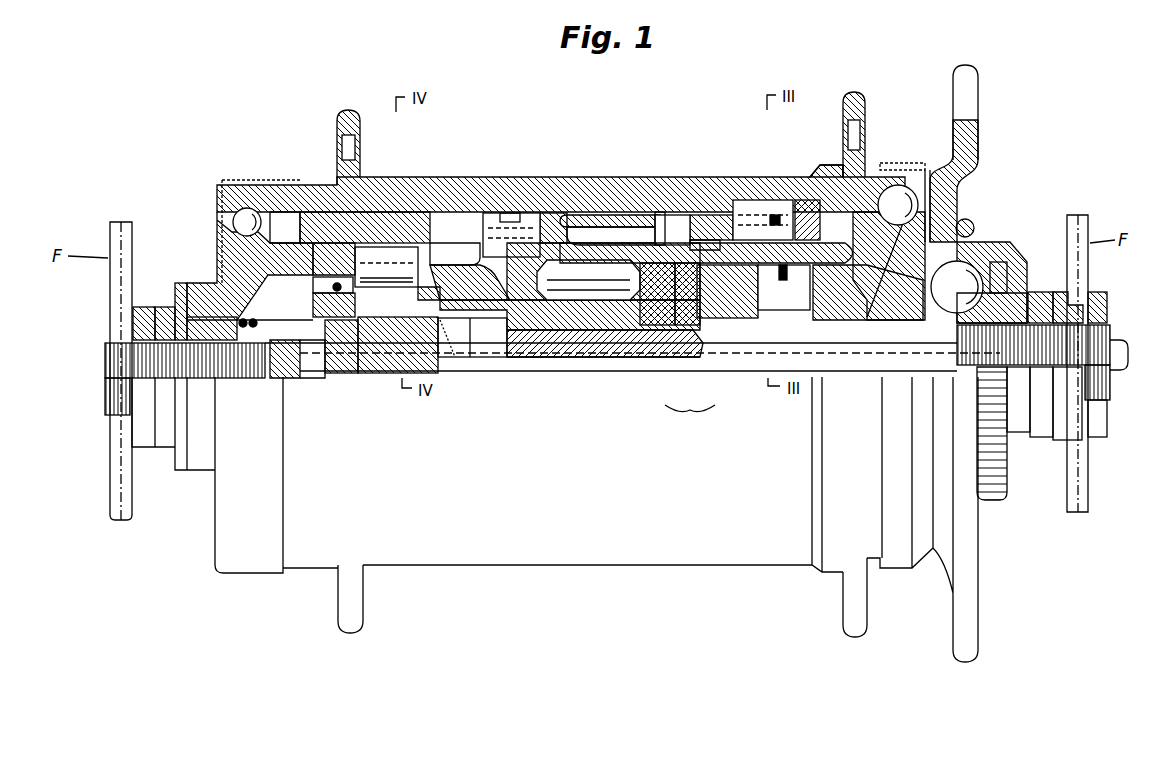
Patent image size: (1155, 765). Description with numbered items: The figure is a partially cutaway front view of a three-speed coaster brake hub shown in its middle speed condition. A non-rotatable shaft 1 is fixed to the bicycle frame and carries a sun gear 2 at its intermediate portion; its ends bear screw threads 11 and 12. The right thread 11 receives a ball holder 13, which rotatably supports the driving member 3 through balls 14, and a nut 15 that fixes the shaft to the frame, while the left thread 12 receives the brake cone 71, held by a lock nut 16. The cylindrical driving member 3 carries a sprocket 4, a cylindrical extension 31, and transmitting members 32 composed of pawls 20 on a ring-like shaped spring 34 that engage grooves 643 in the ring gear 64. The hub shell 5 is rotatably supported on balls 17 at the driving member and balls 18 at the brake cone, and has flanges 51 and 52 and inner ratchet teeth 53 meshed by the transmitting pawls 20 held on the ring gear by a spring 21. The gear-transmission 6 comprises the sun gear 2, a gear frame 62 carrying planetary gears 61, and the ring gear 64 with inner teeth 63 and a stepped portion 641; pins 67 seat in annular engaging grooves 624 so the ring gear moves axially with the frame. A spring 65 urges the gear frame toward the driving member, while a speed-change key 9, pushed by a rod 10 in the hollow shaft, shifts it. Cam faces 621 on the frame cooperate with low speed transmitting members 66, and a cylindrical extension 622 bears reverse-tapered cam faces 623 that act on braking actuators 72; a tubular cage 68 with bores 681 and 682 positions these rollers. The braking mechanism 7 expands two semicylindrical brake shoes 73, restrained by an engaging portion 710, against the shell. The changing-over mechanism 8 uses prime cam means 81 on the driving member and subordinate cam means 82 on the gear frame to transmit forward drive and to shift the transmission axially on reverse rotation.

The non-rotatable shaft 1 is at (292, 372).
The sun gear 2 is at (560, 350).
The driving member 3 is at (980, 245).
The sprocket 4 is at (978, 135).
The hub shell 5 is at (580, 180).
The gear-transmission 6 is at (548, 243).
The braking mechanism 7 is at (322, 212).
The changing-over mechanism 8 is at (690, 419).
The speed-change key 9 is at (430, 372).
The rod 10 is at (528, 340).
The screw thread 11 is at (1105, 400).
The screw thread 12 is at (112, 418).
The ball holder 13 is at (1020, 298).
The balls 14 is at (1010, 265).
The nut 15 is at (1108, 292).
The lock nut 16 is at (155, 307).
The balls 17 is at (910, 190).
The balls 18 is at (234, 216).
The transmitting pawls 20 is at (750, 210).
The ring-like shaped spring 21 is at (775, 222).
The cylindrical extension 31 is at (740, 318).
The transmitting members 32 is at (820, 310).
The ring-like shaped spring 34 is at (783, 280).
The flange 51 is at (850, 90).
The flange 52 is at (345, 108).
The ratchet teeth 53 is at (830, 185).
The planetary gears 61 is at (597, 318).
The gear frame 62 is at (493, 325).
The inner teeth 63 is at (605, 213).
The ring gear 64 is at (638, 215).
The spring 65 is at (255, 318).
The low speed transmitting members 66 is at (517, 245).
The pins 67 is at (672, 225).
The tubular cage 68 is at (455, 254).
The brake cone 71 is at (225, 258).
The braking actuators 72 is at (398, 252).
The brake shoes 73 is at (380, 225).
The prime cam means 81 is at (700, 330).
The subordinate cam means 82 is at (665, 335).
The cam faces 621 is at (493, 240).
The cylindrical extension 622 is at (470, 340).
The cam faces 623 is at (382, 350).
The annular engaging grooves 624 is at (660, 245).
The stepped portion 641 is at (695, 215).
The engaging grooves 643 is at (737, 205).
The bore 681 is at (475, 242).
The bore 682 is at (432, 243).
The engaging portion 710 is at (285, 215).